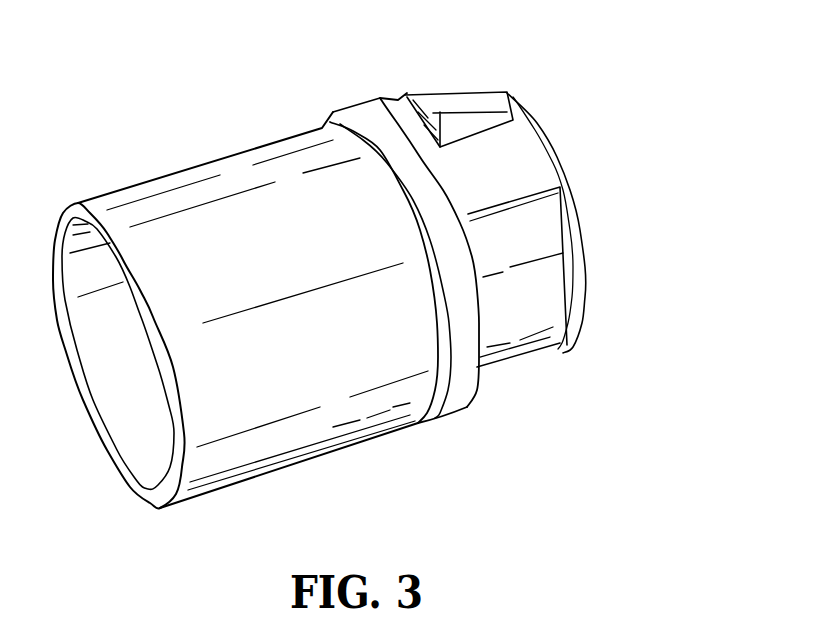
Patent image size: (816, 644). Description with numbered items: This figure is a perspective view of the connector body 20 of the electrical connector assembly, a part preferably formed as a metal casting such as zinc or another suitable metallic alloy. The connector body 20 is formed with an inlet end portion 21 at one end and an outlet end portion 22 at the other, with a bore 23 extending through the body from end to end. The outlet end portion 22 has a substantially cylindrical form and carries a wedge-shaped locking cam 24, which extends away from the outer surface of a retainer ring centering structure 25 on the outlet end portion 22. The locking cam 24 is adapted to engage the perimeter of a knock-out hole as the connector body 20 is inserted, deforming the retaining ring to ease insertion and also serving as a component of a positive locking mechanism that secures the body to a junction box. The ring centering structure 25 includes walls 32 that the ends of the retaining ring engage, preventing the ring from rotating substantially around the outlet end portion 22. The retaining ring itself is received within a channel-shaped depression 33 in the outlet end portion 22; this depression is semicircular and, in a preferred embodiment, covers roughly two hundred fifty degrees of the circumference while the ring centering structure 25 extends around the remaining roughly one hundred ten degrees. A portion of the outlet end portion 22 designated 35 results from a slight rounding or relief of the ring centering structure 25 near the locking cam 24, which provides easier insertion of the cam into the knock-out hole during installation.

The connector body 20 is at (372, 285).
The inlet end portion 21 is at (263, 470).
The outlet end portion 22 is at (521, 358).
The bore 23 is at (138, 427).
The locking cam 24 is at (470, 100).
The retainer ring centering structure 25 is at (530, 163).
The walls 32 is at (522, 202).
The channel-shaped depression 33 is at (530, 293).
The rounded portion of outlet end portion 35 is at (533, 130).